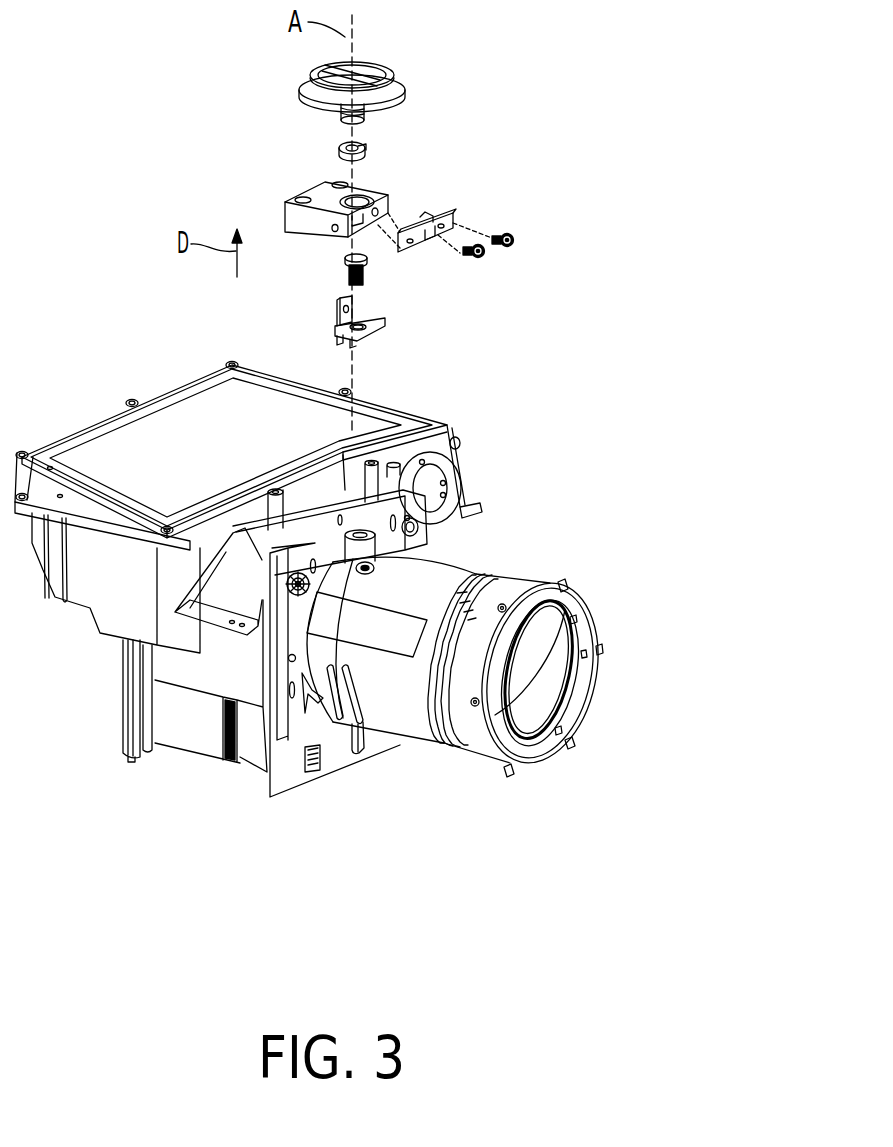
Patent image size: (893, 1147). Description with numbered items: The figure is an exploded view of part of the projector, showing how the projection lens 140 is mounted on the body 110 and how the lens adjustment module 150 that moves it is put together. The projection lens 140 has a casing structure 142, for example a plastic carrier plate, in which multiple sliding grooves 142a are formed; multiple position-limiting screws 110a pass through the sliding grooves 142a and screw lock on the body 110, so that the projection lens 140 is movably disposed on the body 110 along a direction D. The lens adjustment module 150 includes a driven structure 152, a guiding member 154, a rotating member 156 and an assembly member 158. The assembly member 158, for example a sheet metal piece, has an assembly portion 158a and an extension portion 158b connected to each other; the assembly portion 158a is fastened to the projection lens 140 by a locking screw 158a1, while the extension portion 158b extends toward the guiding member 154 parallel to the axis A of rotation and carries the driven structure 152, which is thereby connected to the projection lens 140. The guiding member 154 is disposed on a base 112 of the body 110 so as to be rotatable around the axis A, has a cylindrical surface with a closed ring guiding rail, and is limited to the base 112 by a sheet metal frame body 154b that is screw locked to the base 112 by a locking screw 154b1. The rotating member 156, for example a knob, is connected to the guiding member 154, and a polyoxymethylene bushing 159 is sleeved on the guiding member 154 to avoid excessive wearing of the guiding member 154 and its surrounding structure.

The body 110 is at (403, 427).
The position-limiting screws 110a is at (293, 585).
The base 112 is at (318, 193).
The projection lens 140 is at (450, 580).
The casing structure 142 is at (318, 722).
The sliding grooves 142a is at (297, 604).
The lens adjustment module 150 is at (375, 47).
The driven structure 152 is at (356, 308).
The guiding member 154 is at (368, 108).
The frame body 154b is at (453, 214).
The locking screw 154b1 is at (513, 239).
The rotating member 156 is at (400, 82).
The assembly member 158 is at (262, 271).
The assembly portion 158a is at (338, 329).
The locking screw 158a1 is at (367, 270).
The extension portion 158b is at (338, 314).
The bushing 159 is at (368, 150).